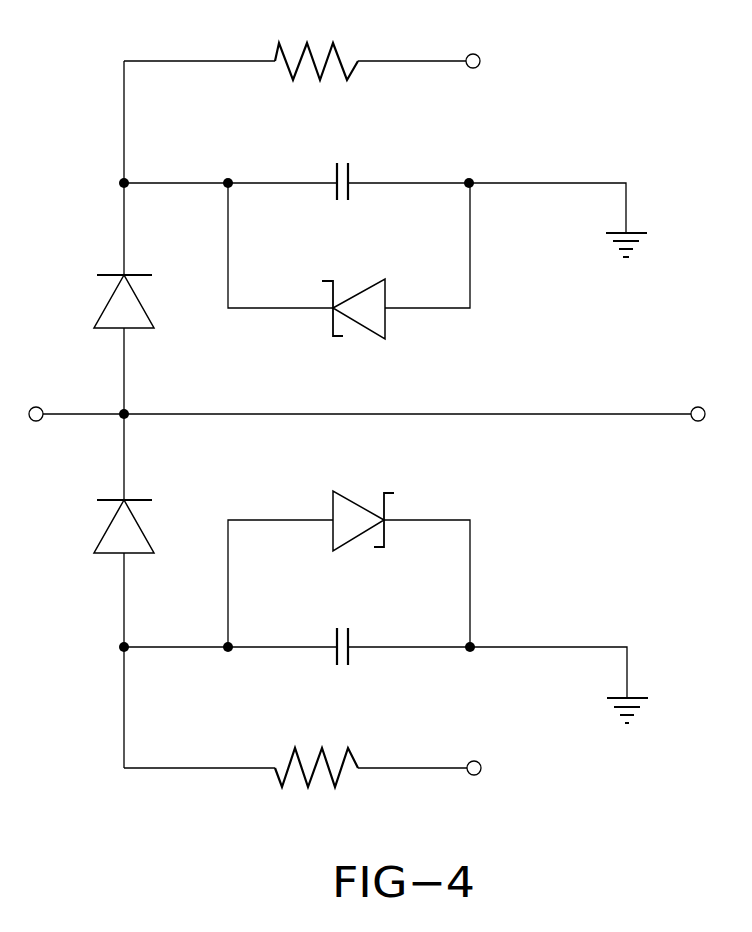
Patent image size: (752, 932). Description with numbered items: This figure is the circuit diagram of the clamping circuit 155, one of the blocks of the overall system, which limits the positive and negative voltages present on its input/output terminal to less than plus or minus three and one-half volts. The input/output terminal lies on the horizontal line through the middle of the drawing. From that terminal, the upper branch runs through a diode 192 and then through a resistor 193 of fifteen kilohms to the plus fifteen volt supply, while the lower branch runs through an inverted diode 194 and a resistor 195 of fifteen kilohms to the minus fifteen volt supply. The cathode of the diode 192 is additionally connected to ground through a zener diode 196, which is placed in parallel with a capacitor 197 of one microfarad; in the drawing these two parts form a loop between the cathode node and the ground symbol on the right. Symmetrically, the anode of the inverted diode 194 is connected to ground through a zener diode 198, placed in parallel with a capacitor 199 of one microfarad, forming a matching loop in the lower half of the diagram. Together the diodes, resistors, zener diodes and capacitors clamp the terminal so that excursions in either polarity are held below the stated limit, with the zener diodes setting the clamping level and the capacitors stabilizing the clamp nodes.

The clamping circuit 155 is at (592, 114).
The diode 192 is at (98, 320).
The resistor 193 is at (333, 43).
The inverted diode 194 is at (98, 545).
The resistor 195 is at (348, 748).
The zener diode 196 is at (364, 290).
The capacitor 197 is at (340, 163).
The zener diode 198 is at (340, 493).
The capacitor 199 is at (343, 628).